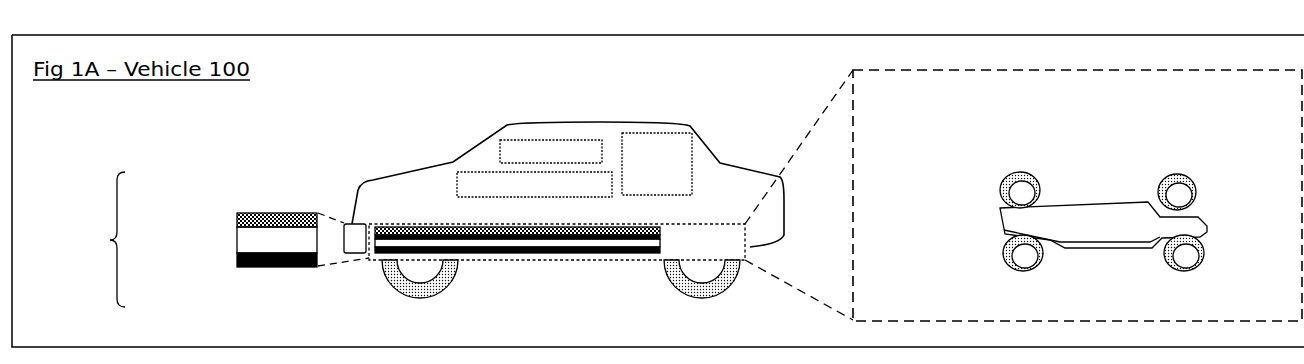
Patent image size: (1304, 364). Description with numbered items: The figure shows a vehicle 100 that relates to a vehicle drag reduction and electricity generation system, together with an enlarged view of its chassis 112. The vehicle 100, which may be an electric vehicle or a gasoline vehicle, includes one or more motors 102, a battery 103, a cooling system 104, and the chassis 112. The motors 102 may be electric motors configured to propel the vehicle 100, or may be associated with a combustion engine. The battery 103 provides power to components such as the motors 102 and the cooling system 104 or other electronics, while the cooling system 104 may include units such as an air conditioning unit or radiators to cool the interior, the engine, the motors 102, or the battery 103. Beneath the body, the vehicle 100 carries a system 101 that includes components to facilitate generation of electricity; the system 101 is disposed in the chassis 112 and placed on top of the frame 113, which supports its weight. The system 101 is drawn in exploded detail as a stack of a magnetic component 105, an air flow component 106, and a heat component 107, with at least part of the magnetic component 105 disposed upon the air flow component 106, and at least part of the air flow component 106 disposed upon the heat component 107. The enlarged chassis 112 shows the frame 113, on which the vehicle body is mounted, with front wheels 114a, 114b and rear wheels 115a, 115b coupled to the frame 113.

The vehicle 100 is at (457, 160).
The system 101 is at (341, 239).
The motors 102 is at (657, 164).
The battery 103 is at (551, 151).
The cooling system 104 is at (534, 184).
The magnetic component 105 is at (265, 213).
The air flow component 106 is at (250, 239).
The heat component 107 is at (252, 268).
The chassis 112 is at (965, 100).
The frame 113 is at (1092, 250).
The front wheel 114a is at (1002, 182).
The front wheel 114b is at (1012, 268).
The rear wheel 115a is at (1207, 155).
The rear wheel 115b is at (1200, 268).